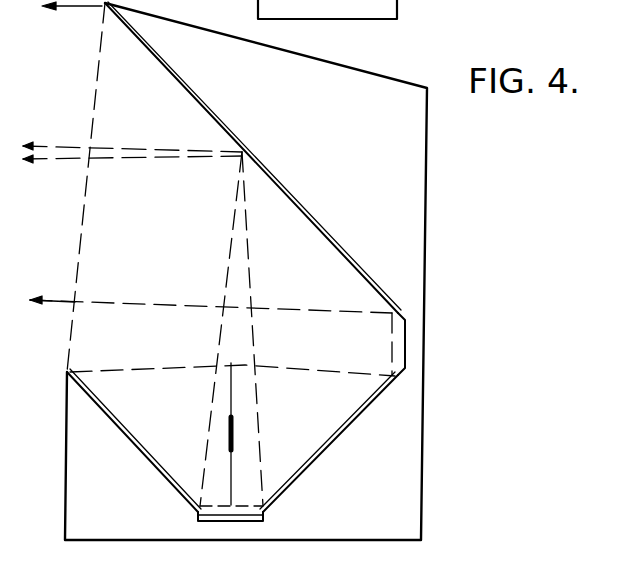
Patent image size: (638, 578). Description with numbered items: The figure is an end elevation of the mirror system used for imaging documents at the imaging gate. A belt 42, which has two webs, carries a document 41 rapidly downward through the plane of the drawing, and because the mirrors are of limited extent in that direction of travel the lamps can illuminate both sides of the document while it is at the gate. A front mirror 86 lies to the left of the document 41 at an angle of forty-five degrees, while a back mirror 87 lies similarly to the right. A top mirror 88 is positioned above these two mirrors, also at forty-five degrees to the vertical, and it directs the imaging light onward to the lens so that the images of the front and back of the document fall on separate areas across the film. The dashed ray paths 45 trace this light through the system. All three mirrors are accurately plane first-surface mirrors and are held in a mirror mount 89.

The document 41 is at (230, 478).
The belt 42 is at (233, 450).
The light ray path 45 is at (78, 208).
The front mirror 86 is at (126, 433).
The back mirror 87 is at (343, 431).
The top mirror 88 is at (298, 210).
The mirror mount 89 is at (246, 271).